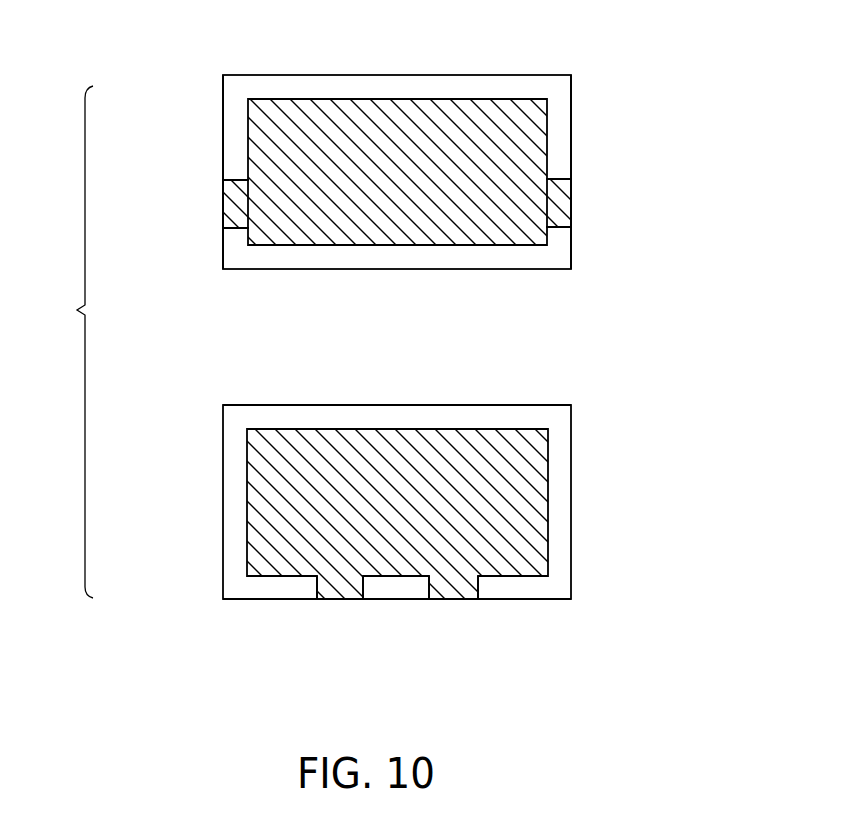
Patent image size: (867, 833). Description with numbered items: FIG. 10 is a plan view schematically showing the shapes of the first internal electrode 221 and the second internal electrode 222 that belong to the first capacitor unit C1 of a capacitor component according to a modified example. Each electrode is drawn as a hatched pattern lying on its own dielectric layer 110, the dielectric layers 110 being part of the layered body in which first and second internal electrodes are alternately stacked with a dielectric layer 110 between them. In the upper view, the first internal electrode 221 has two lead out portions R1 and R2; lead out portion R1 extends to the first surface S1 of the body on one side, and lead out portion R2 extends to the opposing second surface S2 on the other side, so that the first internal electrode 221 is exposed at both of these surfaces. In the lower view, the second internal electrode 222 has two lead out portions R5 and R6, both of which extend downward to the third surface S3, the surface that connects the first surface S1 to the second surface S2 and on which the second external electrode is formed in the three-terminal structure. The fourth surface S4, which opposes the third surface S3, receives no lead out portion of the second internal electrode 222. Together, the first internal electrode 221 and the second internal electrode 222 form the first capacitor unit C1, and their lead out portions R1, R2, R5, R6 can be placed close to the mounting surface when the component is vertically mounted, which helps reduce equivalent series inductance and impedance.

The dielectric layer 110 is at (223, 108).
The first internal electrode 221 is at (360, 128).
The second internal electrode 222 is at (360, 448).
The first surface S1 is at (202, 141).
The second surface S2 is at (592, 140).
The third surface S3 is at (498, 617).
The fourth surface S4 is at (492, 384).
The lead out portion R1 is at (223, 203).
The lead out portion R2 is at (571, 205).
The lead out portion R5 is at (343, 598).
The lead out portion R6 is at (453, 598).
The first capacitor unit C1 is at (67, 342).